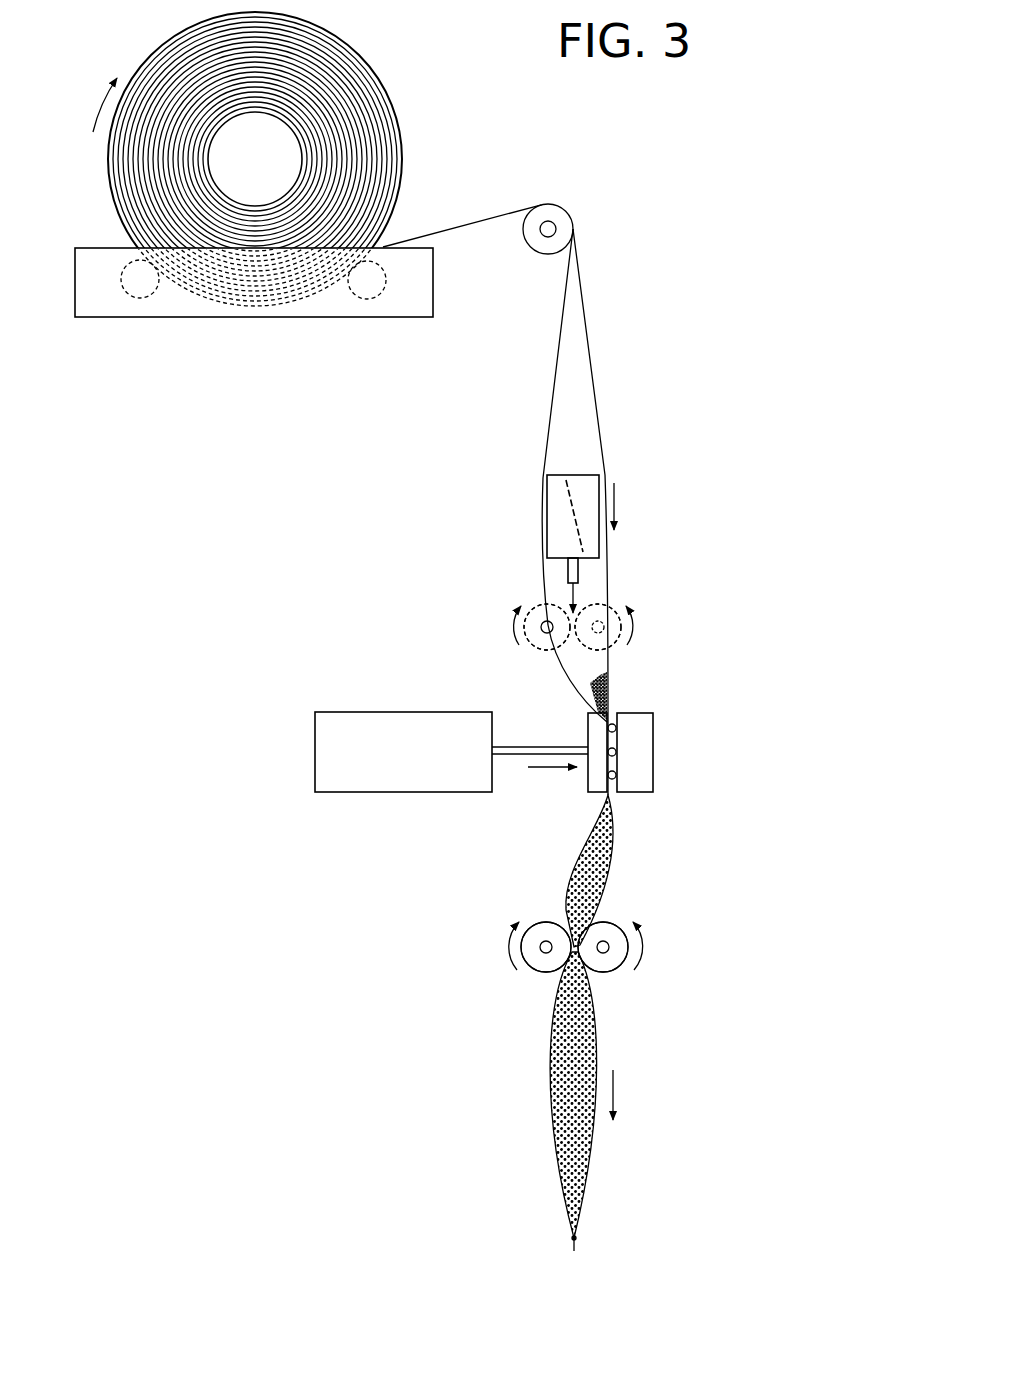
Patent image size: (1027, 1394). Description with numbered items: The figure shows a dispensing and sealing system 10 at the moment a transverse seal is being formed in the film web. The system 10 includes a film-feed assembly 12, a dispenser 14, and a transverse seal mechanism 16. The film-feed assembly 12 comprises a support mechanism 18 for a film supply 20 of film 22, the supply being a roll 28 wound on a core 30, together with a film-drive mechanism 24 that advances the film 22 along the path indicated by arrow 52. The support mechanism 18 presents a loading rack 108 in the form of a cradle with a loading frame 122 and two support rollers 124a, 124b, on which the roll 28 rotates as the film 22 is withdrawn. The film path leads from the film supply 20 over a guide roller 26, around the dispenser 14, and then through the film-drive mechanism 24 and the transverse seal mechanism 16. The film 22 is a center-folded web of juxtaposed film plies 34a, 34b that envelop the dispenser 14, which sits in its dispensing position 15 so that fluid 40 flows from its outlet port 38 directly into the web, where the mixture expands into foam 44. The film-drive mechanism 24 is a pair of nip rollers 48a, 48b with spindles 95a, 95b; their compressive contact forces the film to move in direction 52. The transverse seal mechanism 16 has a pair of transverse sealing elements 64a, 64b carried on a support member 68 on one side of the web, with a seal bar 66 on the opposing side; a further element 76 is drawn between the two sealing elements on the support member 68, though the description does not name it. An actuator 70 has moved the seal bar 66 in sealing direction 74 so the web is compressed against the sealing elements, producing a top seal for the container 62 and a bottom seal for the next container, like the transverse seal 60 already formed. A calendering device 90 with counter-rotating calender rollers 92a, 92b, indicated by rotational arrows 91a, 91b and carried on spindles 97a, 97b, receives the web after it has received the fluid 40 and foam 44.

The dispensing and sealing system 10 is at (668, 144).
The film-feed assembly 12 is at (297, 426).
The dispenser 14 is at (578, 490).
The dispensing position 15 is at (523, 502).
The transverse seal mechanism 16 is at (657, 723).
The support mechanism 18 is at (73, 282).
The film supply 20 is at (399, 109).
The film 22 is at (466, 226).
The film-drive mechanism 24 is at (614, 602).
The guide roller 26 is at (566, 216).
The roll 28 is at (362, 58).
The core 30 is at (247, 113).
The film ply 34a is at (588, 338).
The film ply 34b is at (561, 318).
The outlet port 38 is at (567, 572).
The fluid 40 is at (571, 592).
The foam 44 is at (562, 1078).
The nip roller 48a is at (606, 645).
The nip roller 48b is at (540, 645).
The film path direction 52 is at (617, 503).
The transverse seal 60 is at (573, 1238).
The container 62 is at (593, 1048).
The transverse sealing element 64a is at (618, 728).
The transverse sealing element 64b is at (612, 795).
The seal bar 66 is at (595, 733).
The support member 68 is at (640, 773).
The actuator 70 is at (376, 772).
The sealing direction 74 is at (542, 770).
The middle electrode 76 is at (618, 752).
The calendering device 90 is at (619, 923).
The rotational arrow 91a is at (636, 950).
The rotational arrow 91b is at (513, 947).
The calender roller 92a is at (610, 965).
The calender roller 92b is at (540, 965).
The spindle 95a is at (604, 627).
The spindle 95b is at (541, 627).
The spindle 97a is at (603, 940).
The spindle 97b is at (546, 940).
The loading rack 108 is at (416, 300).
The loading frame 122 is at (100, 302).
The support roller 124a is at (151, 299).
The support roller 124b is at (371, 300).